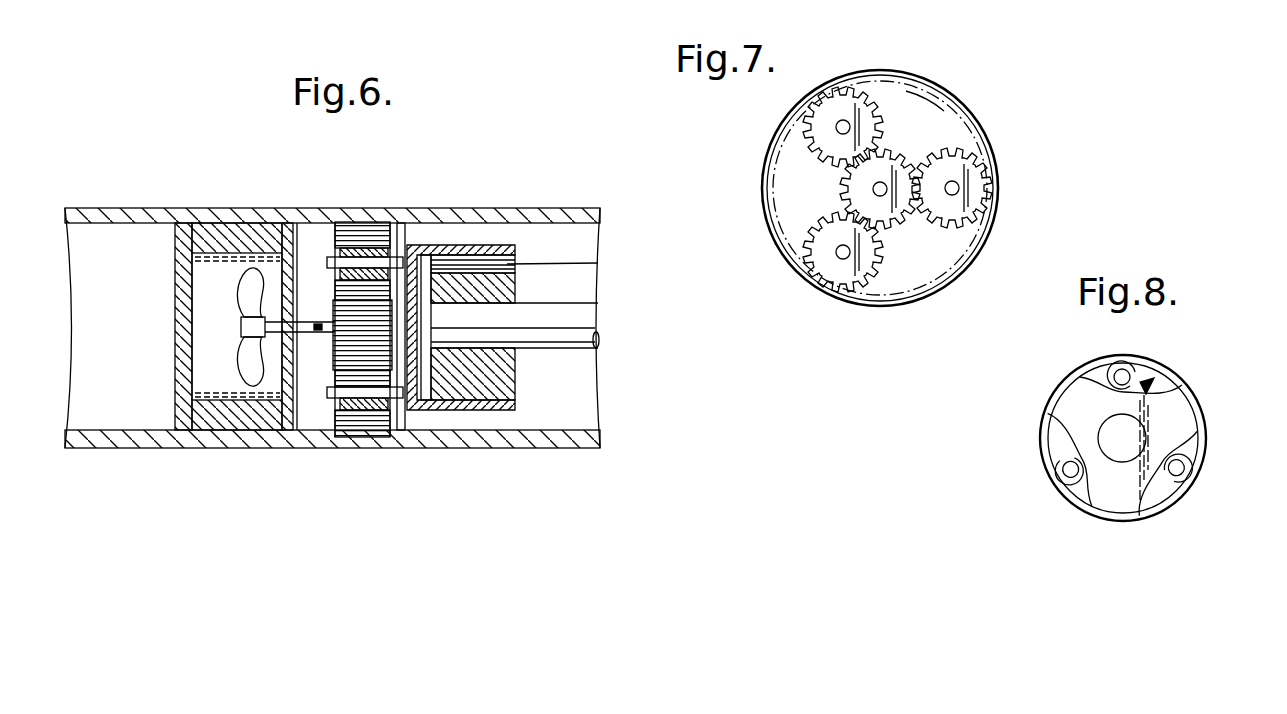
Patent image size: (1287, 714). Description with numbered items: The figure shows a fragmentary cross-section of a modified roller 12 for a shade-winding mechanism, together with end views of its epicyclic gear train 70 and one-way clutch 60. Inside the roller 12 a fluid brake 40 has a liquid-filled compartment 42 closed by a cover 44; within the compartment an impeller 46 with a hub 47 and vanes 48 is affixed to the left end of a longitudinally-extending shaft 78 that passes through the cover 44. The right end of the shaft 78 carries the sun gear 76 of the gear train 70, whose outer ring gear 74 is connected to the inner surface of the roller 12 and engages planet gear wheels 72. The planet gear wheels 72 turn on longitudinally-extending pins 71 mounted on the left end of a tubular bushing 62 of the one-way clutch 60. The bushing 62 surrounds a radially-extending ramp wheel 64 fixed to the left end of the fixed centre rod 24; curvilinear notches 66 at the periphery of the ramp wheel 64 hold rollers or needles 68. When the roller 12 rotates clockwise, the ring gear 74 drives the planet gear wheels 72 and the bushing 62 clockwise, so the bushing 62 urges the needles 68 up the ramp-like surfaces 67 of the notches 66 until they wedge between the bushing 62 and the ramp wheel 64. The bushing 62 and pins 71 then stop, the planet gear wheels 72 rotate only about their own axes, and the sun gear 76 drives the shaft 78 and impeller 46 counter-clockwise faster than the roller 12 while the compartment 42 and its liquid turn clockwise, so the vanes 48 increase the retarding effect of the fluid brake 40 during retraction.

In FIG. 6, the roller 12 is at (478, 222).
In FIG. 6, the fixed centre rod 24 is at (573, 322).
In FIG. 8, the fixed centre rod 24 is at (1118, 447).
In FIG. 6, the fluid brake 40 is at (233, 270).
In FIG. 6, the compartment 42 is at (208, 285).
In FIG. 6, the cover 44 is at (289, 272).
In FIG. 6, the impeller 46 is at (258, 290).
In FIG. 6, the vanes 48 is at (273, 273).
In FIG. 6, the hub 47 is at (244, 327).
In FIG. 6, the one-way clutch 60 is at (489, 240).
In FIG. 8, the one-way clutch 60 is at (1209, 450).
In FIG. 6, the tubular bushing 62 is at (517, 258).
In FIG. 8, the tubular bushing 62 is at (1057, 395).
In FIG. 6, the ramp wheel 64 is at (505, 293).
In FIG. 8, the ramp wheel 64 is at (1163, 430).
In FIG. 8, the curvilinear notches 66 is at (1147, 380).
In FIG. 8, the ramp-like surfaces 67 is at (1167, 390).
In FIG. 6, the rollers or needles 68 is at (545, 455).
In FIG. 8, the rollers or needles 68 is at (1119, 370).
In FIG. 6, the epicyclic gear train 70 is at (360, 220).
In FIG. 7, the epicyclic gear train 70 is at (972, 270).
In FIG. 6, the pins 71 is at (400, 260).
In FIG. 6, the planet gear wheels 72 is at (395, 255).
In FIG. 7, the planet gear wheels 72 is at (803, 116).
In FIG. 6, the outer ring gear 74 is at (377, 248).
In FIG. 7, the outer ring gear 74 is at (930, 106).
In FIG. 6, the sun gear 76 is at (357, 345).
In FIG. 7, the sun gear 76 is at (846, 192).
In FIG. 6, the shaft 78 is at (318, 332).